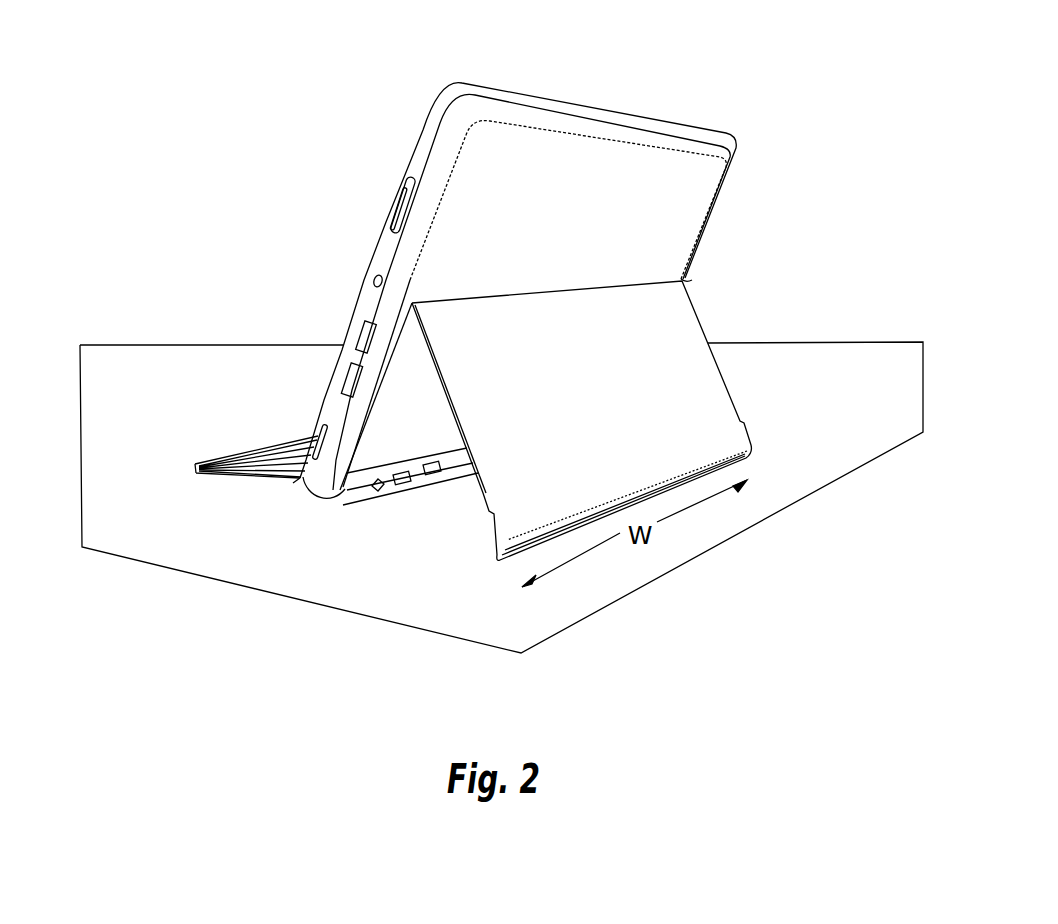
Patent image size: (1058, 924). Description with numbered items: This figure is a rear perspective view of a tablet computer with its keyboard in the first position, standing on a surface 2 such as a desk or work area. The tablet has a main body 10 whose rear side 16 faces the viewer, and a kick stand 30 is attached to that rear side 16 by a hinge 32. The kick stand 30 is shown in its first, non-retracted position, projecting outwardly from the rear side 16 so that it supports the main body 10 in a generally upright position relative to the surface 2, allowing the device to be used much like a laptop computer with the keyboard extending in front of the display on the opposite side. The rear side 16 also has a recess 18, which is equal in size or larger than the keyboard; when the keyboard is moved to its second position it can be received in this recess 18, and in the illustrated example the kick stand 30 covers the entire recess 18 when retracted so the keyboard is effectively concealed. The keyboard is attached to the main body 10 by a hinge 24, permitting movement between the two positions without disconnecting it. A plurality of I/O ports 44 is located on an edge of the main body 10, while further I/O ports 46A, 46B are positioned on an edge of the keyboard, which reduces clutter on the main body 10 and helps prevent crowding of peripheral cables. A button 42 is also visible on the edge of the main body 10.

The surface 2 is at (805, 463).
The main body 10 is at (633, 88).
The rear side 16 is at (568, 226).
The recess 18 is at (392, 422).
The hinge 24 is at (312, 508).
The kick stand 30 is at (682, 348).
The hinge 32 is at (684, 281).
The button 42 is at (402, 188).
The I/O ports 44 is at (343, 381).
The I/O port 46A is at (436, 474).
The I/O port 46B is at (378, 491).